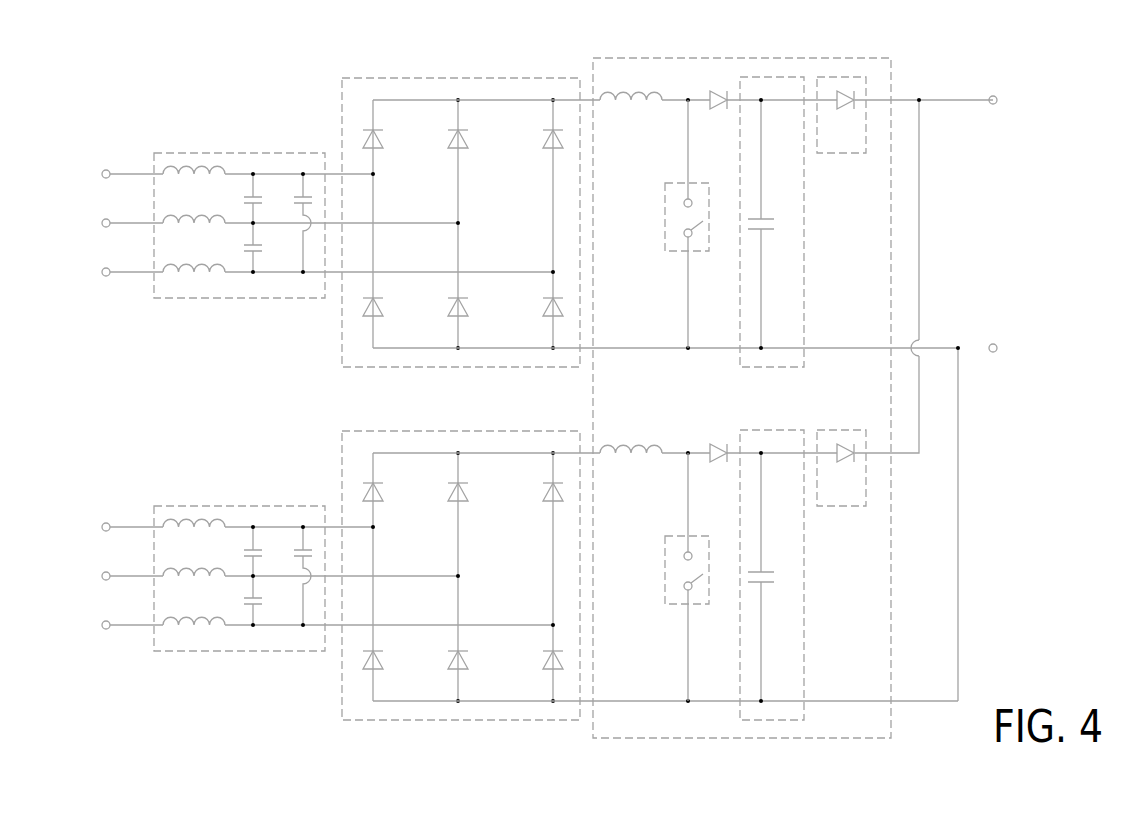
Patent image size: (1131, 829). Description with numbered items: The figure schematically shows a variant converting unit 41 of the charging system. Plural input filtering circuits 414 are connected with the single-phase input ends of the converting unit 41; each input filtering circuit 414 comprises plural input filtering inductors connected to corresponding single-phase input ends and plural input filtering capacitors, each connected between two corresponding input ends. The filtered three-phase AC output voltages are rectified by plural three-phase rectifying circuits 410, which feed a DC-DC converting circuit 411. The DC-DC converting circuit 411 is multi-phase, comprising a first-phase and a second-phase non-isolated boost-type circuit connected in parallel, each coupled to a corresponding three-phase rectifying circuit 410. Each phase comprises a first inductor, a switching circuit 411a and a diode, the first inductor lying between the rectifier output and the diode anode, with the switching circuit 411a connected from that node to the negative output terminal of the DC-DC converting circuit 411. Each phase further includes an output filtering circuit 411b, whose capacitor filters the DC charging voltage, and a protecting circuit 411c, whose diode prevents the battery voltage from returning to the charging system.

The converting unit 41 is at (1121, 68).
The three-phase rectifying circuit 410 is at (462, 78).
The DC-DC converting circuit 411 is at (713, 58).
The switching circuit 411a is at (665, 214).
The output filtering circuit 411b is at (805, 287).
The protecting circuit 411c is at (840, 154).
The input filtering circuit 414 is at (196, 153).